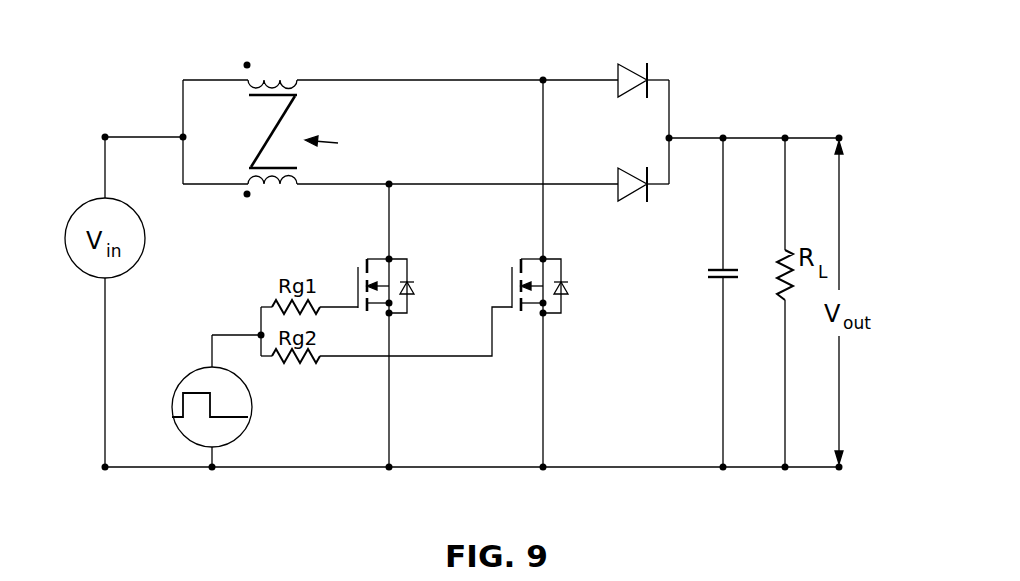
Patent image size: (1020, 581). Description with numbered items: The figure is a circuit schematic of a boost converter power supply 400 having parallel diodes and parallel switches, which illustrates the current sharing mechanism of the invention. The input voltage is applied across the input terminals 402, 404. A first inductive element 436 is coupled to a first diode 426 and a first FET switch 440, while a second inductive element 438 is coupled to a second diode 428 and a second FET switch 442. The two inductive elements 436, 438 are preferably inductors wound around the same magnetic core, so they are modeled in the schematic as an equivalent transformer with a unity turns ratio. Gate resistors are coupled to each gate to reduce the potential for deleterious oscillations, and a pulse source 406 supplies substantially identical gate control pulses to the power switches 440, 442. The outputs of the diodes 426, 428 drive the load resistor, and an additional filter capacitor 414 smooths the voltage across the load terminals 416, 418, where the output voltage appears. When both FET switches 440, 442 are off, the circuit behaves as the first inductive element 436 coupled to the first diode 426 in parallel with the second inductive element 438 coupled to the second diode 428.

The boost converter power supply 400 is at (486, 52).
The input terminal 402 is at (105, 137).
The input terminal 404 is at (105, 467).
The pulse source 406 is at (252, 405).
The filter capacitor 414 is at (708, 281).
The load terminal 416 is at (839, 138).
The load terminal 418 is at (839, 467).
The first diode 426 is at (636, 64).
The second diode 428 is at (637, 200).
The first inductive element 436 is at (280, 72).
The second inductive element 438 is at (254, 195).
The first FET switch 440 is at (569, 290).
The second FET switch 442 is at (415, 288).